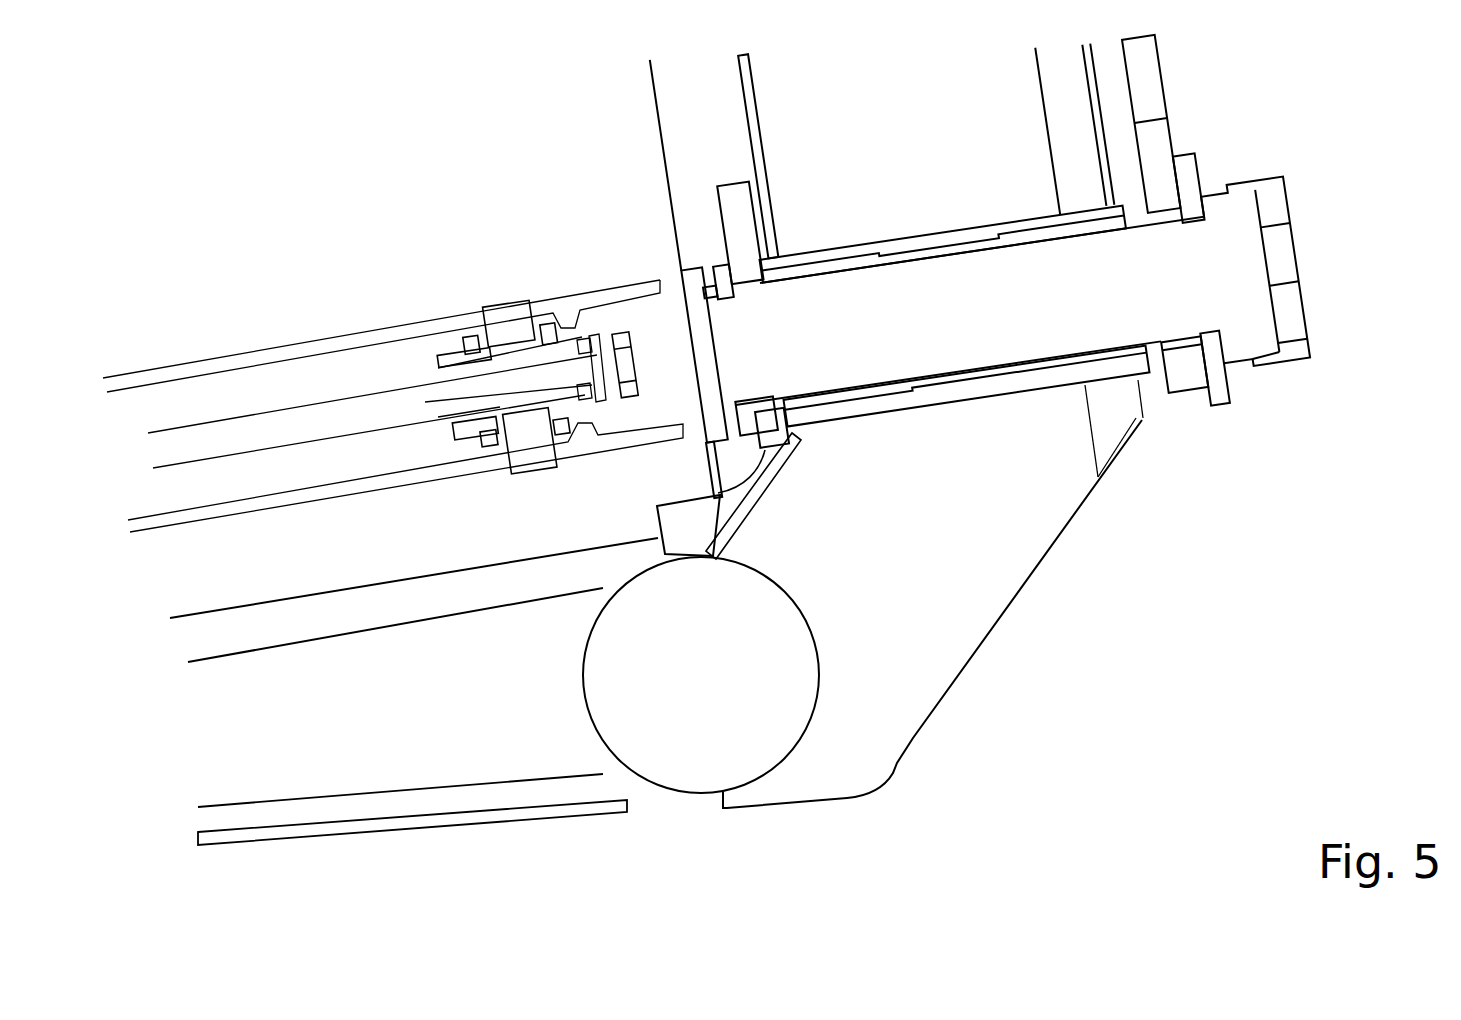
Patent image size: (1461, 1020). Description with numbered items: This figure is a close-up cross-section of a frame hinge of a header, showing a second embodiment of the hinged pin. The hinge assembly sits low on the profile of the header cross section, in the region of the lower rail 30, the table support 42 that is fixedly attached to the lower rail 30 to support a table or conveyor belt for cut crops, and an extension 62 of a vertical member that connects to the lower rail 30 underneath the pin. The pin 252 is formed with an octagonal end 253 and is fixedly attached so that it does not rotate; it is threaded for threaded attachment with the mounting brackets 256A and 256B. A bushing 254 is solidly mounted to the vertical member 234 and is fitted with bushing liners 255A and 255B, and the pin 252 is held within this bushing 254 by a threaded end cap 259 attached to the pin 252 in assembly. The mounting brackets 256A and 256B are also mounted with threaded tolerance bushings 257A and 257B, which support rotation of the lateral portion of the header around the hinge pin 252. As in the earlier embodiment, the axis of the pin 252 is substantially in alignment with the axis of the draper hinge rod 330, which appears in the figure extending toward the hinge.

The draper hinge rod 330 is at (270, 425).
The table support 42 is at (386, 722).
The lower rail 30 is at (723, 681).
The extension of the vertical member 62 is at (917, 563).
The threaded end cap 259 is at (722, 433).
The pin 252 is at (1165, 287).
The octagonal end 253 is at (1287, 315).
The bushing 254 is at (940, 245).
The bushing liner 255A is at (880, 390).
The bushing liner 255B is at (1160, 365).
The mounting bracket 256A is at (1145, 87).
The mounting bracket 256B is at (690, 133).
The threaded tolerance bushing 257A is at (1183, 172).
The threaded tolerance bushing 257B is at (720, 262).
The vertical member 234 is at (750, 98).